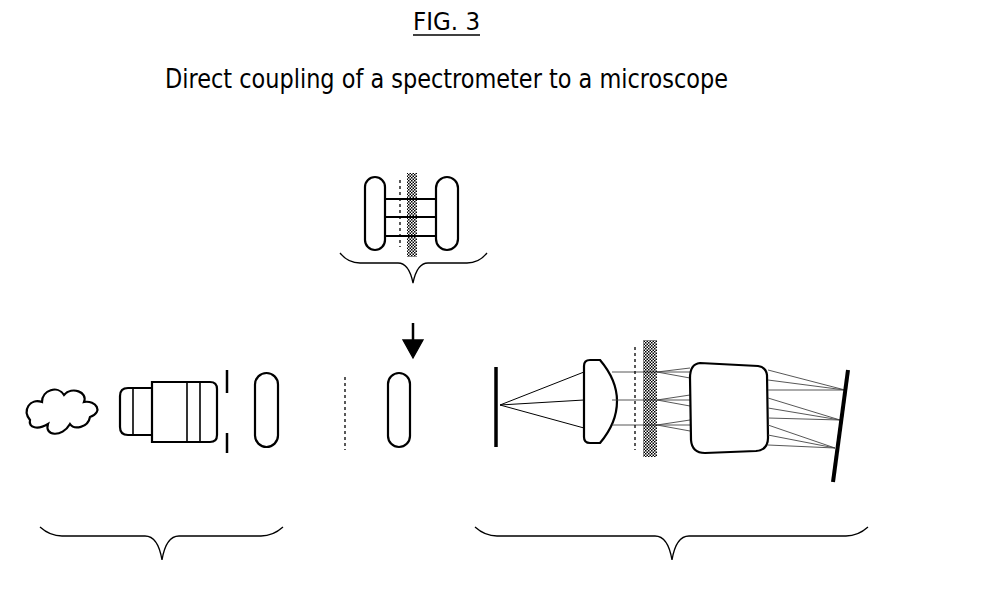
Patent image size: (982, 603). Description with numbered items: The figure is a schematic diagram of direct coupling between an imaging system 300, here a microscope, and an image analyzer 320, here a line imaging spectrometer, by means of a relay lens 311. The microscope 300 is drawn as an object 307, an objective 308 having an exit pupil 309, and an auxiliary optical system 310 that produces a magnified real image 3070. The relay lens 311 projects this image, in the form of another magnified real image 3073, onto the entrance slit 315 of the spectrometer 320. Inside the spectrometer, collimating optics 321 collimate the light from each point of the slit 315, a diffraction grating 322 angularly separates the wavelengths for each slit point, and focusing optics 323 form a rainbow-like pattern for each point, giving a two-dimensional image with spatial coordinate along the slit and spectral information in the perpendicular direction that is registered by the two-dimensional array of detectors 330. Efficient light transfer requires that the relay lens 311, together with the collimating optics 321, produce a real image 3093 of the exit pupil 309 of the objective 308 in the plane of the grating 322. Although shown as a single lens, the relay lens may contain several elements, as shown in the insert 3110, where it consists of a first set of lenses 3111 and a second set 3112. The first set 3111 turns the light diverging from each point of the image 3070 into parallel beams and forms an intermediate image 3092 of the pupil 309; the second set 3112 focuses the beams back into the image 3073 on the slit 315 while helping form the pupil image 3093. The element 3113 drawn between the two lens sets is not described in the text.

The imaging system 300 is at (161, 557).
The object 307 is at (58, 445).
The objective 308 is at (167, 452).
The exit pupil 309 is at (223, 373).
The auxiliary optical system 310 is at (265, 450).
The relay lens 311 is at (397, 450).
The entrance slit 315 is at (500, 447).
The image analyzer 320 is at (671, 558).
The collimating optics 321 is at (597, 447).
The diffraction grating 322 is at (653, 457).
The focusing optics 323 is at (720, 453).
The 2-D array of detectors 330 is at (834, 443).
The magnified real image 3070 is at (343, 375).
The magnified real image 3073 is at (487, 374).
The intermediate image of the pupil 3092 is at (399, 190).
The real image of the exit pupil 3093 is at (638, 374).
The insert 3110 is at (413, 285).
The first set of lenses 3111 is at (361, 212).
The second set of lenses 3112 is at (452, 168).
The grating of coupling unit 3113 is at (412, 170).